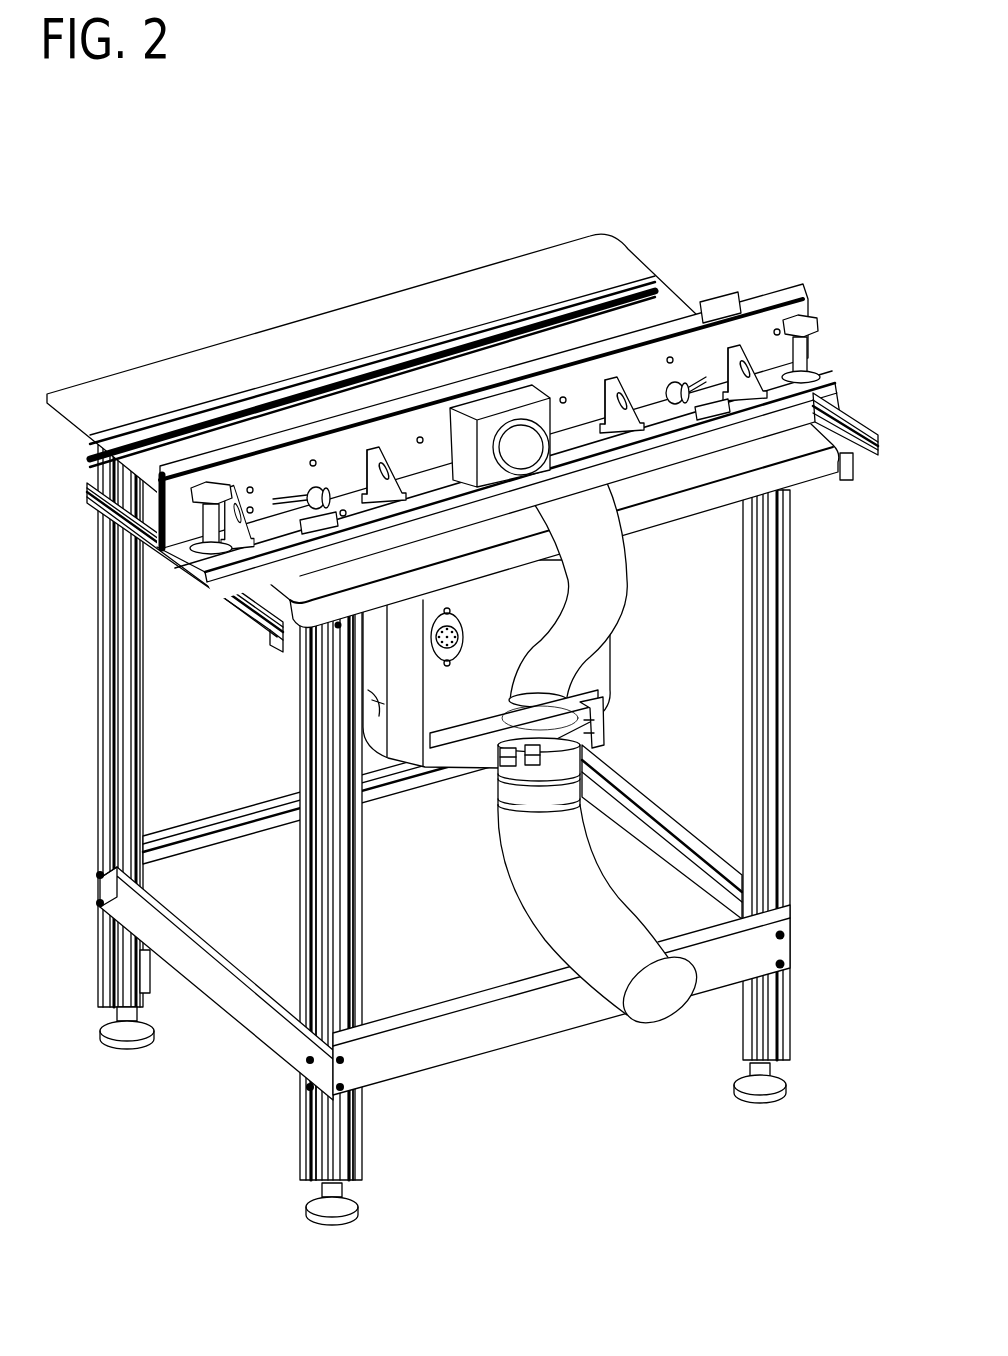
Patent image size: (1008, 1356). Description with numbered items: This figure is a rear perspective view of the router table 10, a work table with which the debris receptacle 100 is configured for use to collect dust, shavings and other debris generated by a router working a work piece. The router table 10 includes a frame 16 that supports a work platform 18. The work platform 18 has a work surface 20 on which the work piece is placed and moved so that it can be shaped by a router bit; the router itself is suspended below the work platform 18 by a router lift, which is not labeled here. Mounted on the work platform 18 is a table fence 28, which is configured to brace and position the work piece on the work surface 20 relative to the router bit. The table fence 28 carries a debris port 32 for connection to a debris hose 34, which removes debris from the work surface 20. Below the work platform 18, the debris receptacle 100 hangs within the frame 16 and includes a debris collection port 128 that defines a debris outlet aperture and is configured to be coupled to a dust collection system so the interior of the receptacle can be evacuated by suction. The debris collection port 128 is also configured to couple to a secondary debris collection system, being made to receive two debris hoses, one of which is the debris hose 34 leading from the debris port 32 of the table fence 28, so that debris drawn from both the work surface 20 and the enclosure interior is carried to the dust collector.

The router table 10 is at (658, 165).
The frame 16 is at (810, 706).
The work platform 18 is at (488, 264).
The work surface 20 is at (368, 332).
The table fence 28 is at (799, 293).
The debris port 32 is at (503, 400).
The debris hose 34 is at (614, 494).
The debris receptacle 100 is at (621, 674).
The debris collection port 128 is at (473, 740).